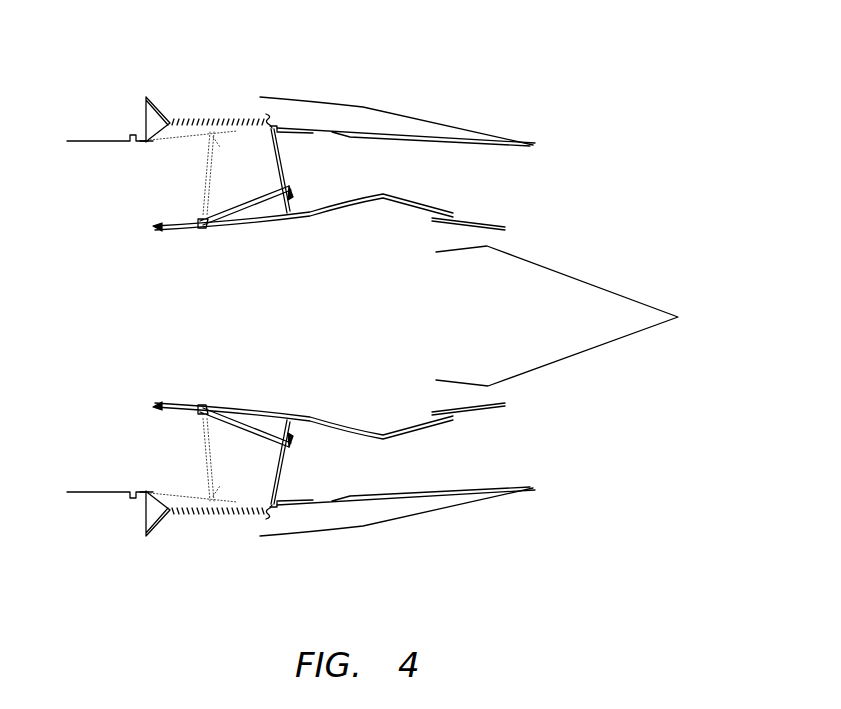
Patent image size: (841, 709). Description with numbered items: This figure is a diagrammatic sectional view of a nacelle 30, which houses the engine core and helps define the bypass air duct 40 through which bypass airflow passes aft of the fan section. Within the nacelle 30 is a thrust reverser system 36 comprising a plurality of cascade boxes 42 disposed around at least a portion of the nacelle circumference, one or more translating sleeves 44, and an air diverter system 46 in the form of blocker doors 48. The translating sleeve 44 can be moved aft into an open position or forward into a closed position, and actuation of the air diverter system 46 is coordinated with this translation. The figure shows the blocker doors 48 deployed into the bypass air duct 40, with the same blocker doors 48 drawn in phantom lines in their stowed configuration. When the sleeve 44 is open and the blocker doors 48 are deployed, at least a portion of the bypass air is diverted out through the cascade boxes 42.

The nacelle assembly 30 is at (235, 561).
The thrust reverser system 36 is at (187, 571).
The bypass air duct 40 is at (150, 179).
The cascade boxes 42 is at (220, 114).
The translating sleeve 44 is at (364, 106).
The air diverter system 46 is at (318, 447).
The blocker doors 48 is at (284, 150).